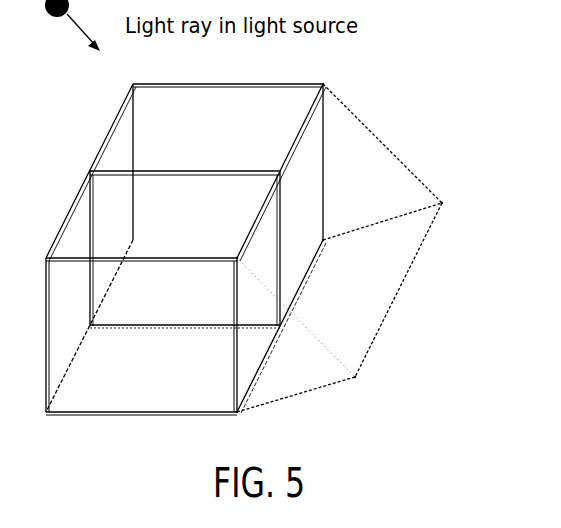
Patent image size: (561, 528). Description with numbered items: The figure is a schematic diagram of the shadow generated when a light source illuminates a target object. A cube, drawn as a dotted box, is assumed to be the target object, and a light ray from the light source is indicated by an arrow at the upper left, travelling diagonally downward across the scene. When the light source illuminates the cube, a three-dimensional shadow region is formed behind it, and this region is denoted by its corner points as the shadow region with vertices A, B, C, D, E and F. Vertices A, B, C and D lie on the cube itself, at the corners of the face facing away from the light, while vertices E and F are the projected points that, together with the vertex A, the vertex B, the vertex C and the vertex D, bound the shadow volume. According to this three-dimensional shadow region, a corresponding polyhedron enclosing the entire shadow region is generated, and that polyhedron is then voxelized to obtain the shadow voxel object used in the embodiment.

The vertex A of shadow region A is at (313, 71).
The vertex B of shadow region B is at (227, 240).
The vertex C of shadow region C is at (227, 428).
The vertex D of shadow region D is at (335, 221).
The vertex E of shadow region E is at (457, 206).
The vertex F of shadow region F is at (371, 383).